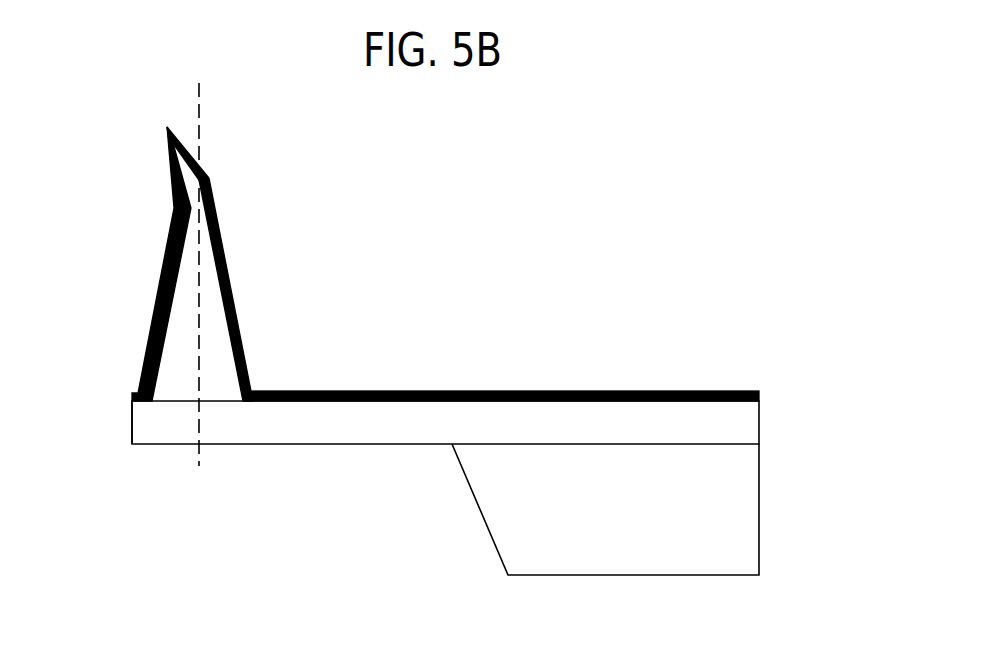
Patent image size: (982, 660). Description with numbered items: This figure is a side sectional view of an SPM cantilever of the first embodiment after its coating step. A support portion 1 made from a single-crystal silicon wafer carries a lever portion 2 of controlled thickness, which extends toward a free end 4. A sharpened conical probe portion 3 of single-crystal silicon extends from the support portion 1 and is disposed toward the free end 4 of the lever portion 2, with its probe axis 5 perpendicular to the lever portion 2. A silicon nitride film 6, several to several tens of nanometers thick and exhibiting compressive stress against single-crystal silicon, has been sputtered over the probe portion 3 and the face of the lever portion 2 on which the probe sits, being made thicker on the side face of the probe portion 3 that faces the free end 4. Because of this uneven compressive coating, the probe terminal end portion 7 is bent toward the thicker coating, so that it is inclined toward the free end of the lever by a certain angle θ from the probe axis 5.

The support portion 1 is at (735, 515).
The lever portion 2 is at (350, 427).
The probe portion 3 is at (217, 333).
The free end 4 is at (143, 423).
The probe axis 5 is at (201, 152).
The silicon nitride film 6 is at (380, 393).
The probe terminal end portion 7 is at (172, 164).